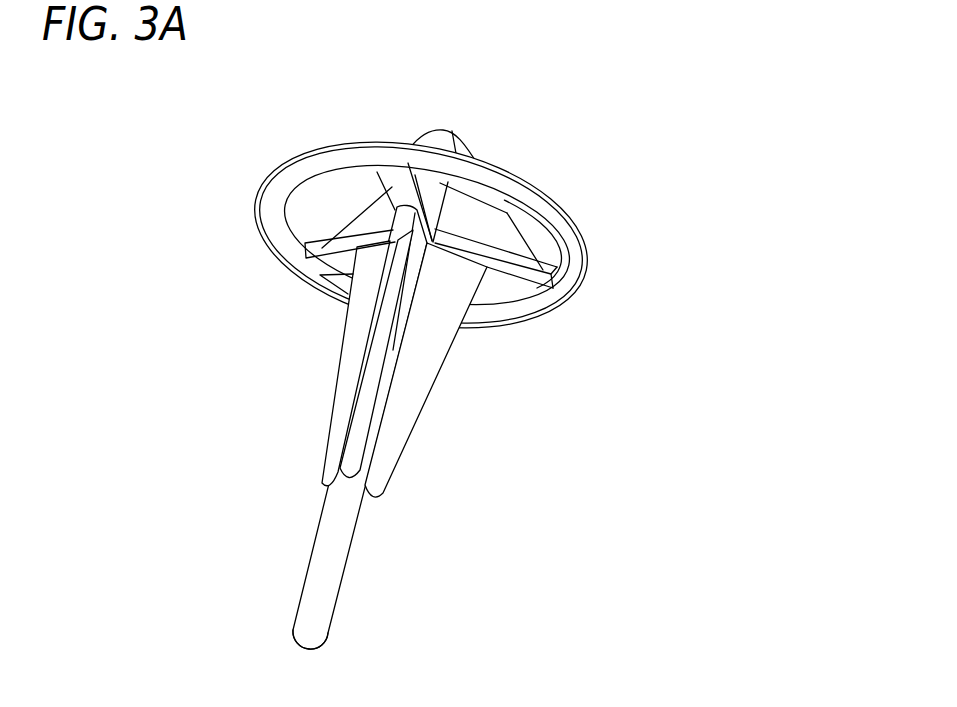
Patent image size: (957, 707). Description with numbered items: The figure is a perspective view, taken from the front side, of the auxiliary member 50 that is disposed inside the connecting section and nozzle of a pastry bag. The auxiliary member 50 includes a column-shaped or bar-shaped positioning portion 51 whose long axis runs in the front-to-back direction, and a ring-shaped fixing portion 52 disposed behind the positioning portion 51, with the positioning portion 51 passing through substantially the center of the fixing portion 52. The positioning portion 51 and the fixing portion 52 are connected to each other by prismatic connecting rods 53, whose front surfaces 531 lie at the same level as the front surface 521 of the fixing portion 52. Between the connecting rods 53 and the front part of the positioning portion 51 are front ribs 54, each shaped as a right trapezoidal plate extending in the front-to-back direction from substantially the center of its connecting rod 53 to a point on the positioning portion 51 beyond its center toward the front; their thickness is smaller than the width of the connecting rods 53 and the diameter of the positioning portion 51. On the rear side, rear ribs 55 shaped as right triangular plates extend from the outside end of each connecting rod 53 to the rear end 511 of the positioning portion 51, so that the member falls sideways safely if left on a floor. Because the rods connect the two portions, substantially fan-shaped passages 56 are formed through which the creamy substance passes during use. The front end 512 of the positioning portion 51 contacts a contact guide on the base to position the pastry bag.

The auxiliary member 50 is at (482, 365).
The positioning portion 51 is at (314, 442).
The rear end of the positioning portion 511 is at (443, 150).
The front end of the positioning portion 512 is at (307, 650).
The fixing portion 52 is at (411, 280).
The front surface of the fixing portion 521 is at (506, 326).
The connecting rods 53 is at (445, 213).
The front surfaces of the connecting rods 531 is at (540, 292).
The front ribs 54 is at (348, 348).
The rear ribs 55 is at (440, 150).
The passages 56 is at (337, 185).